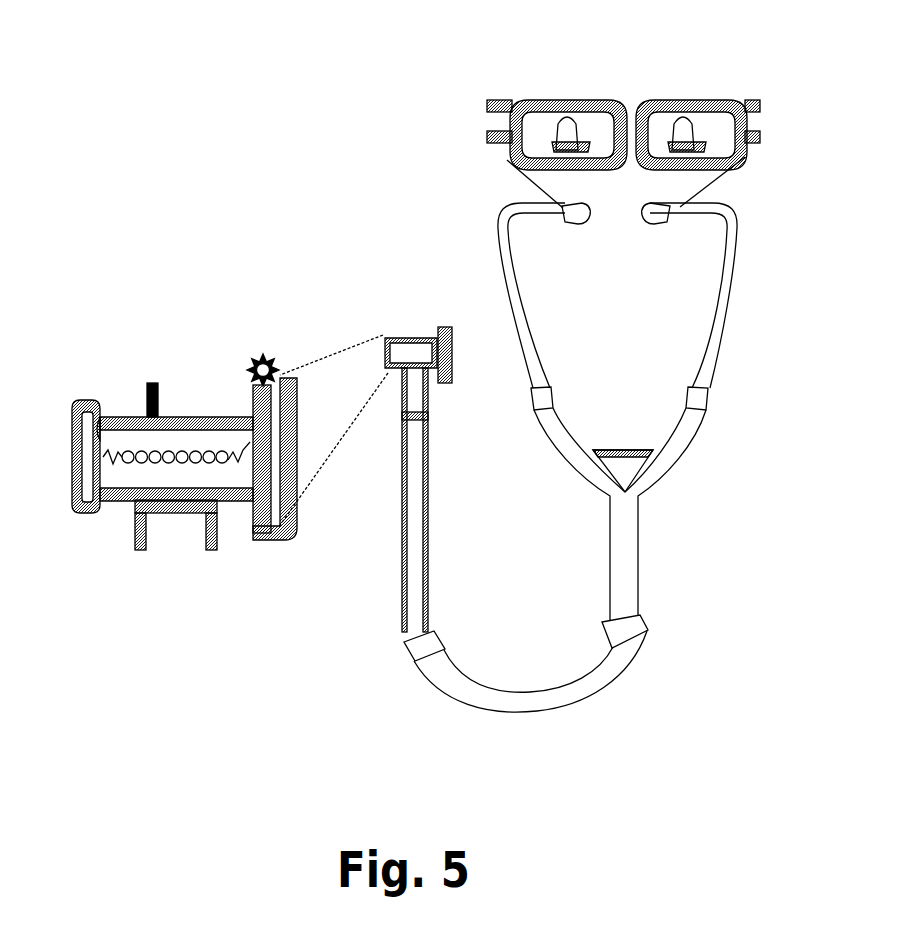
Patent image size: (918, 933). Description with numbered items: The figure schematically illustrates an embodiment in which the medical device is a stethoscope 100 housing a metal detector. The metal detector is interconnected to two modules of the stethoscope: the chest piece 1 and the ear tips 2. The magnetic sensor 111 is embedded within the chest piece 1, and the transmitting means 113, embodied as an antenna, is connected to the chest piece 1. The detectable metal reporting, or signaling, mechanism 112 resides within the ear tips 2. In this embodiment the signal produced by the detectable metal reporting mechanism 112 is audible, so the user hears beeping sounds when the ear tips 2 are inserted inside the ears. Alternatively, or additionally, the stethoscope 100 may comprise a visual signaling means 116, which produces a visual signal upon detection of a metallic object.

The stethoscope 100 is at (579, 457).
The chest piece 1 is at (408, 357).
The ear tips 2 is at (657, 215).
The detectable metal reporting mechanism 112 is at (680, 125).
The magnetic sensor 111 is at (150, 450).
The transmitting means 113 is at (157, 392).
The visual signaling means 116 is at (263, 357).